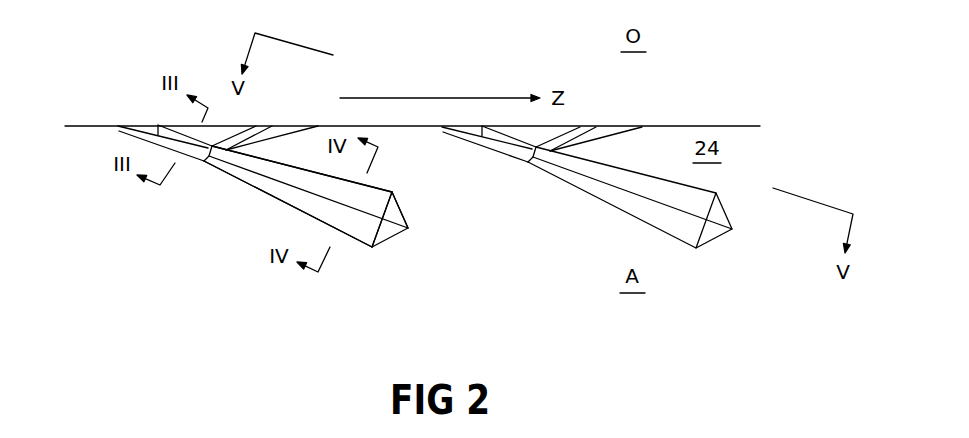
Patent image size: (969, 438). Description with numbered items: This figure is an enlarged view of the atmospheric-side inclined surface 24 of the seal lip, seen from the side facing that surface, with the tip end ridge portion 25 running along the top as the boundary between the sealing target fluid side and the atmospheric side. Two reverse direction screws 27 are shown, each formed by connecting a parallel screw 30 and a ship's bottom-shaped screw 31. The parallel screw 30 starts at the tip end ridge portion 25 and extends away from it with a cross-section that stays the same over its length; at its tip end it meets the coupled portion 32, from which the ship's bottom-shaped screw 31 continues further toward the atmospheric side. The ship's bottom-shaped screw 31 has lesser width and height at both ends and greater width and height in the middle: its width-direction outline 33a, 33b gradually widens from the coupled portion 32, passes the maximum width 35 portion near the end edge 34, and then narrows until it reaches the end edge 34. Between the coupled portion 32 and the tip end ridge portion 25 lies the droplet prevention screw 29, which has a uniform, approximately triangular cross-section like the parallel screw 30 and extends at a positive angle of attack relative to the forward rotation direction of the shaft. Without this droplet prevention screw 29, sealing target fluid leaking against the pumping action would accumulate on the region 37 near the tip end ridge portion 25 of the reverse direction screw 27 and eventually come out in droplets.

The inclined surface of the atmospheric side 24 is at (412, 143).
The tip end ridge portion 25 is at (308, 123).
The reverse direction screw 27 is at (353, 245).
The droplet prevention screw 29 is at (260, 125).
The parallel screw 30 is at (177, 158).
The ship's bottom-shaped screw 31 is at (247, 198).
The coupled portion 32 is at (208, 152).
The outline in the width direction 33a is at (293, 160).
The outline in the width direction 33b is at (272, 207).
The end edge 34 is at (410, 227).
The maximum width portion 35 is at (390, 191).
The region near the tip end ridge portion 37 is at (212, 146).